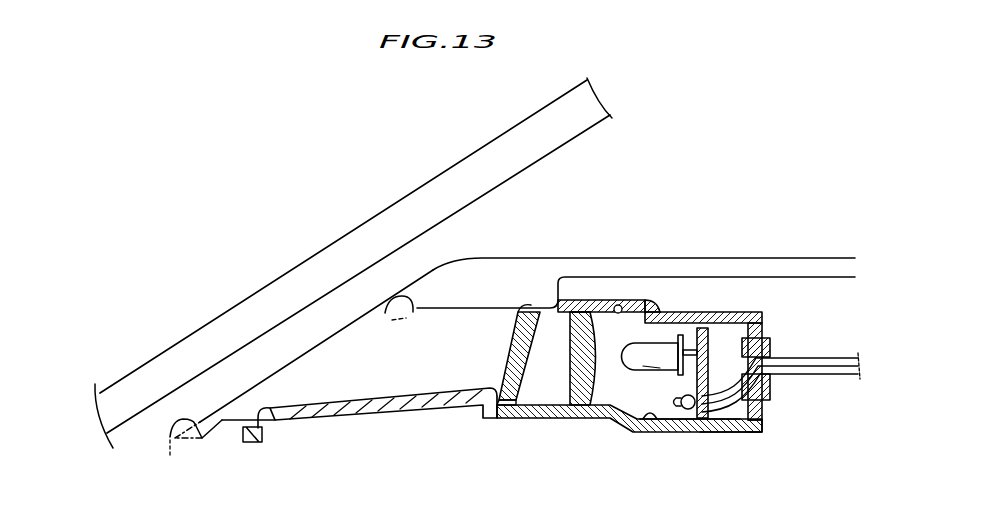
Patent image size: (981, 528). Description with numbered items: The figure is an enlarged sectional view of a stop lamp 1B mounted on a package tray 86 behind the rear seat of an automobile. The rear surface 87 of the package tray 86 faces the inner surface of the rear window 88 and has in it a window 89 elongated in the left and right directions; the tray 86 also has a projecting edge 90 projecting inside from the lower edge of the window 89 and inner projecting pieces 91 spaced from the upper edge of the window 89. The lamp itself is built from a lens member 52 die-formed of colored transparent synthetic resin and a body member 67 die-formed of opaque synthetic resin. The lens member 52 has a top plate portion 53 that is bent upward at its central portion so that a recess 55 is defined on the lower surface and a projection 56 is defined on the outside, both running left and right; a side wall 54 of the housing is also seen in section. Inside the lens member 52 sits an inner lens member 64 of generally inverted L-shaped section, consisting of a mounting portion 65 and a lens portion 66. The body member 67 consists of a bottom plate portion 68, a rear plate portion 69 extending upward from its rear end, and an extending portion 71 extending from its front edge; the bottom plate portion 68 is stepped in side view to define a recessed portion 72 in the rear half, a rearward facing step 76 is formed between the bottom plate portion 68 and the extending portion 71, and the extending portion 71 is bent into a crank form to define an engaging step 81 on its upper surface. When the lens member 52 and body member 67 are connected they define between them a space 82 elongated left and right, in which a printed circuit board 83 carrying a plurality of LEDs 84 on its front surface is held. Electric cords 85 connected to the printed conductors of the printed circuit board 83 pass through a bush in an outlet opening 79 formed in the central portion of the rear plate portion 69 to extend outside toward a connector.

The stop lamp 1B is at (242, 236).
The rear window 88 is at (466, 152).
The rear surface 87 is at (431, 271).
The package tray 86 is at (772, 258).
The window 89 is at (386, 308).
The top plate portion 53 is at (528, 311).
The side wall 54 is at (510, 360).
The projection 56 is at (613, 300).
The recess 55 is at (628, 300).
The mounting portion 65 is at (576, 300).
The lens member 52 is at (706, 318).
The LEDs 84 is at (701, 328).
The lens portion 66 is at (598, 368).
The inner lens member 64 is at (583, 420).
The space 82 is at (558, 365).
The bottom plate portion 68 is at (546, 420).
The body member 67 is at (690, 435).
The recessed portion 72 is at (648, 424).
The printed circuit board 83 is at (738, 430).
The rear plate portion 69 is at (762, 427).
The rearward facing step 76 is at (510, 412).
The electric cords 85 is at (822, 372).
The outlet opening 79 is at (772, 386).
The extending portion 71 is at (370, 421).
The engaging step 81 is at (262, 442).
The projecting edge 90 is at (182, 452).
The inner projecting pieces 91 is at (282, 395).